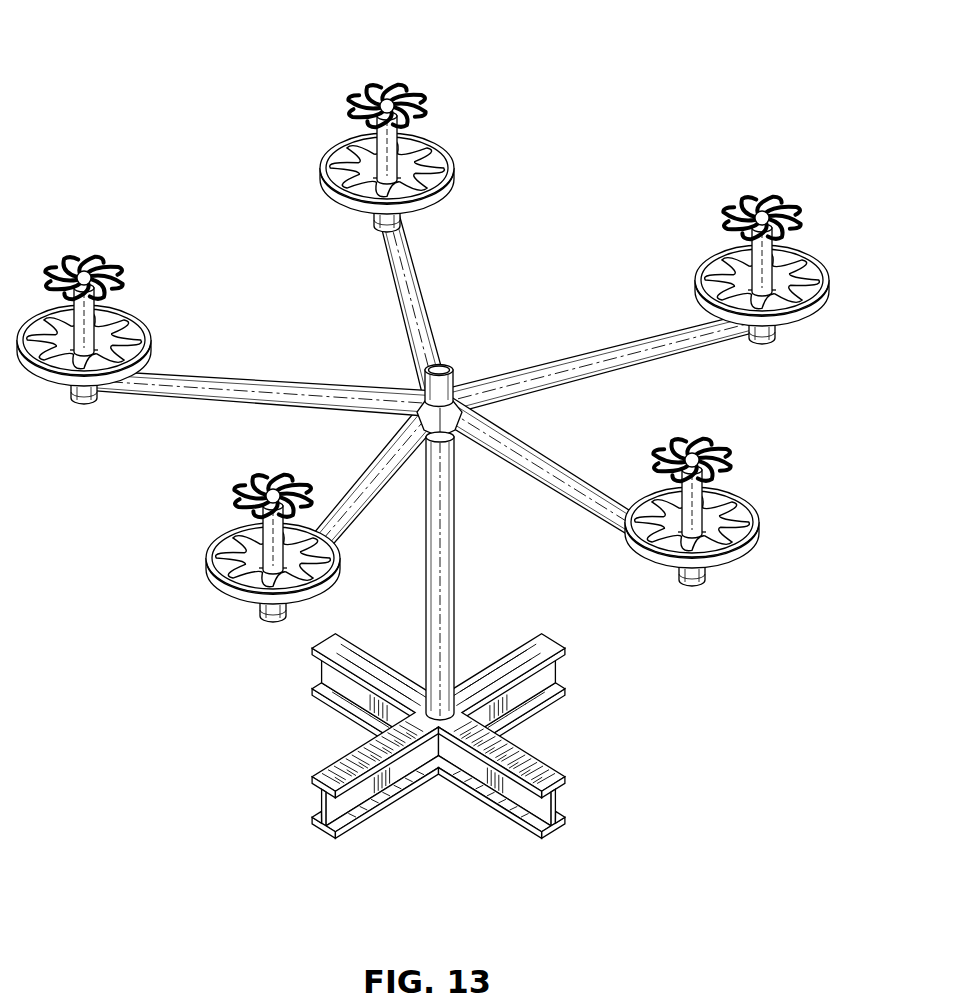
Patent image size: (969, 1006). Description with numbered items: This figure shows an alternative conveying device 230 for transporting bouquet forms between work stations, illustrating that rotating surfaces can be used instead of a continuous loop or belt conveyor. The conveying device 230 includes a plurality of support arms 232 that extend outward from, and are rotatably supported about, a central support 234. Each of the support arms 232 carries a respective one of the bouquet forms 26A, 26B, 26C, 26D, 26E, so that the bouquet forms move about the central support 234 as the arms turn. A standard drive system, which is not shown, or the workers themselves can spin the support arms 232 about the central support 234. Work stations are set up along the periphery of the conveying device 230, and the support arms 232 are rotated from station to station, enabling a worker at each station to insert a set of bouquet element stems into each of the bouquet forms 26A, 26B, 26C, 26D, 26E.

The conveying device 230 is at (172, 107).
The support arms 232 is at (418, 300).
The central support 234 is at (456, 375).
The bouquet form 26A is at (452, 111).
The bouquet form 26B is at (692, 225).
The bouquet form 26C is at (748, 466).
The bouquet form 26D is at (213, 510).
The bouquet form 26E is at (147, 265).